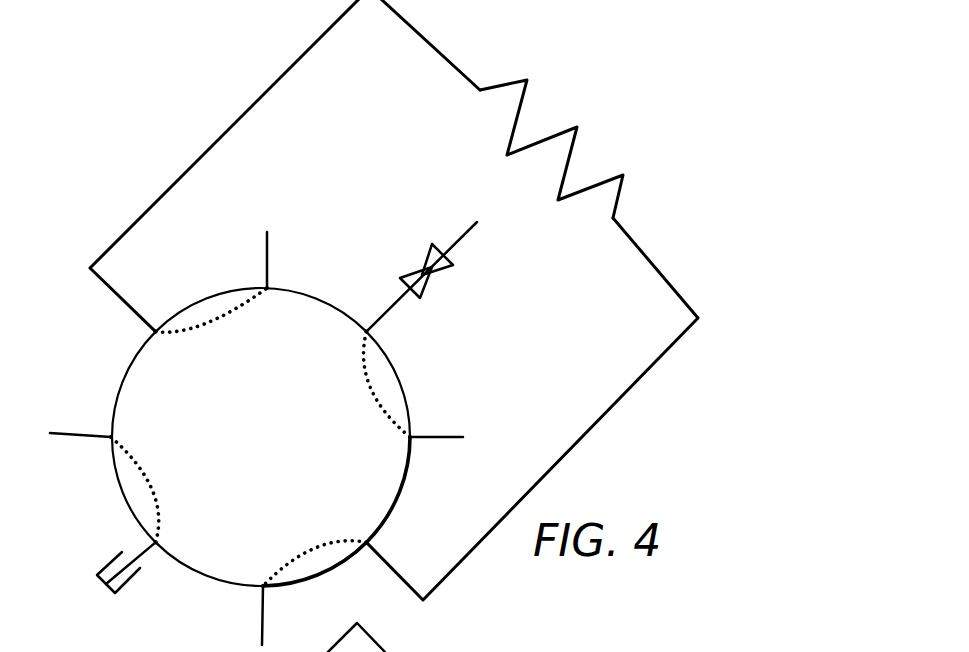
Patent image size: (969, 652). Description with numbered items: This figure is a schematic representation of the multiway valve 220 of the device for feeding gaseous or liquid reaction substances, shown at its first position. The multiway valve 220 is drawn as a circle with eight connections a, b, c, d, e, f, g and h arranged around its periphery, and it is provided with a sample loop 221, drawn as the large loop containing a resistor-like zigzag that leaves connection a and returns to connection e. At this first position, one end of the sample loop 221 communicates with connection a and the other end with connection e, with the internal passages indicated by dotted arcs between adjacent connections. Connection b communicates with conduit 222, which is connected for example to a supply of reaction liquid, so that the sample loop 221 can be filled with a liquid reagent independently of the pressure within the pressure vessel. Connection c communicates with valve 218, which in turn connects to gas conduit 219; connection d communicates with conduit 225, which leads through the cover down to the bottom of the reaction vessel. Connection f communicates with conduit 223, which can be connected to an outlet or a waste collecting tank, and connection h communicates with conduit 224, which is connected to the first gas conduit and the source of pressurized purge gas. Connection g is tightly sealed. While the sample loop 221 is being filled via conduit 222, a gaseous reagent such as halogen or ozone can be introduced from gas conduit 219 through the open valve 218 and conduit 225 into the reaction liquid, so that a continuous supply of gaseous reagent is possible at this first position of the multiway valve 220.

The valve 218 is at (437, 277).
The gas conduit 219 is at (472, 230).
The multiway valve 220 is at (128, 350).
The sample loop 221 is at (608, 175).
The conduit 222 is at (267, 245).
The conduit 223 is at (259, 611).
The conduit 224 is at (72, 434).
The conduit 225 is at (450, 438).
The connection a is at (156, 333).
The connection b is at (269, 292).
The connection c is at (360, 337).
The connection d is at (405, 442).
The connection e is at (366, 540).
The connection f is at (262, 582).
The connection g is at (157, 539).
The connection h is at (113, 434).